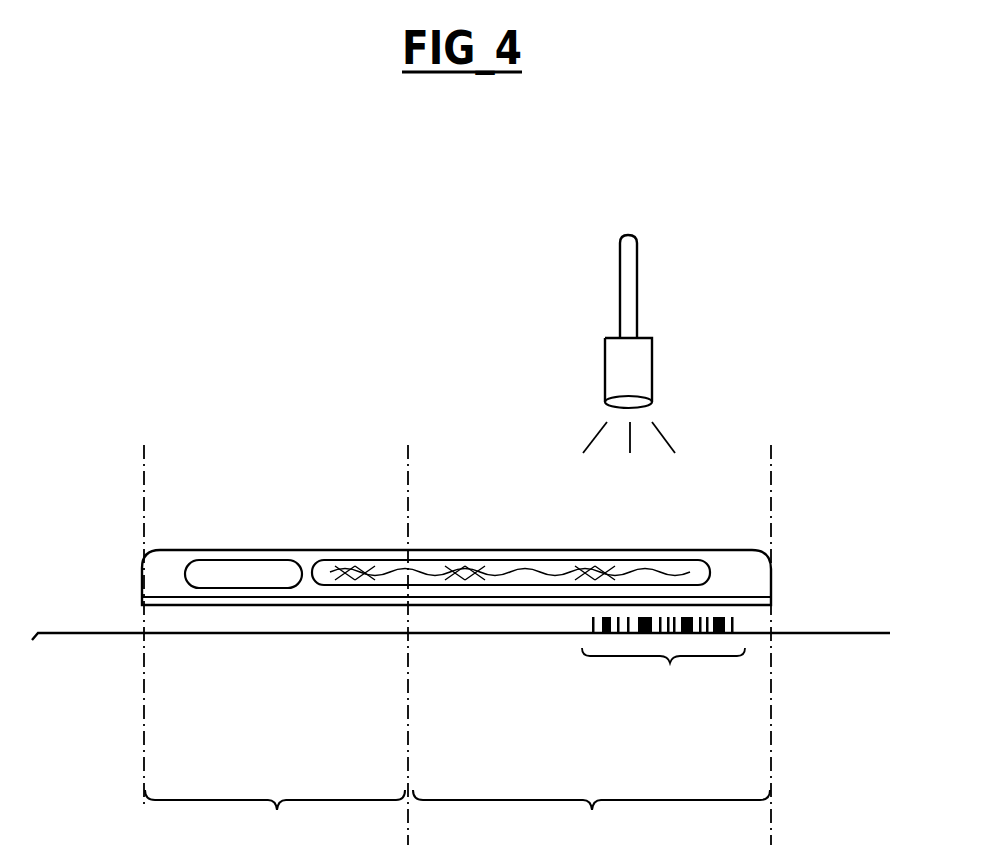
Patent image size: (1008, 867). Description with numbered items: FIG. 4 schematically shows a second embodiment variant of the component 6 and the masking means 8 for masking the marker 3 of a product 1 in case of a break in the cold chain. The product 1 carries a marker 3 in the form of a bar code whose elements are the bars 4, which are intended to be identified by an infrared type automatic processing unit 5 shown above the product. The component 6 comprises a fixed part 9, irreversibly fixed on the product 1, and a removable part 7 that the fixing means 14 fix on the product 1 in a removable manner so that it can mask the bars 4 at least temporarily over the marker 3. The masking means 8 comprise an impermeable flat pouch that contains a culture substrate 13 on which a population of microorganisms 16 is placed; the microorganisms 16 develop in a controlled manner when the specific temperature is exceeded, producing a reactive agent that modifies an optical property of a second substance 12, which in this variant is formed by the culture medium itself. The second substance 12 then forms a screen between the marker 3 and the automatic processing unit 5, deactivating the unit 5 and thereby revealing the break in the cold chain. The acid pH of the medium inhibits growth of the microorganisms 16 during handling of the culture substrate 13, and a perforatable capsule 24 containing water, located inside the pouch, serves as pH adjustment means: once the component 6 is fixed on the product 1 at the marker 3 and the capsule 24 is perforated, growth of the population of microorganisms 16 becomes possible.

The product 1 is at (58, 645).
The marker 3 is at (671, 668).
The bars of the bar code 4 is at (590, 635).
The automatic processing unit 5 is at (637, 275).
The component 6 is at (774, 549).
The removable part 7 is at (591, 820).
The masking means 8 is at (158, 570).
The fixed part 9 is at (275, 820).
The second substance 12 is at (340, 576).
The culture substrate 13 is at (353, 585).
The fixing means 14 is at (142, 597).
The population of microorganisms 16 is at (490, 575).
The perforatable capsule 24 is at (268, 572).